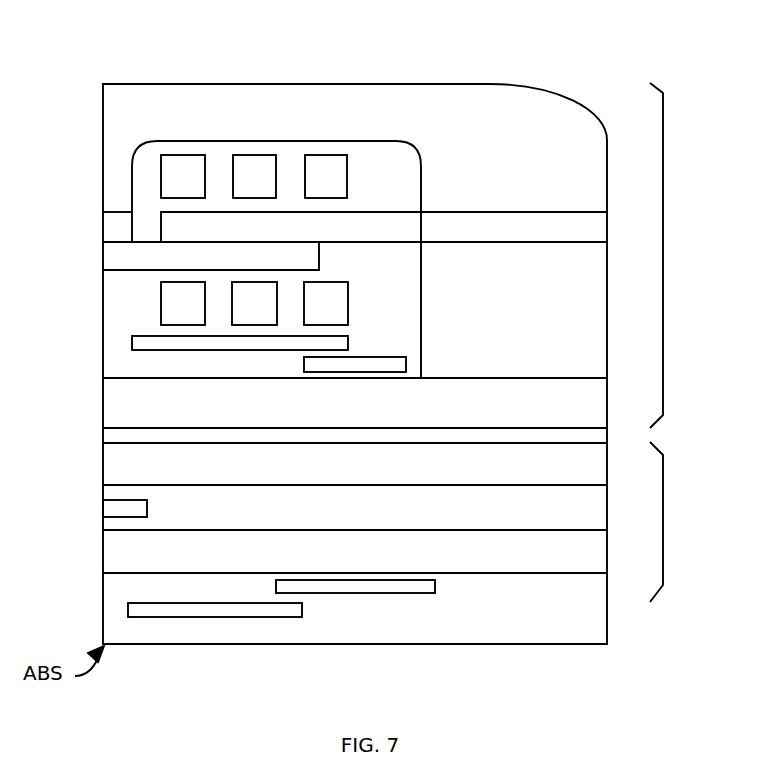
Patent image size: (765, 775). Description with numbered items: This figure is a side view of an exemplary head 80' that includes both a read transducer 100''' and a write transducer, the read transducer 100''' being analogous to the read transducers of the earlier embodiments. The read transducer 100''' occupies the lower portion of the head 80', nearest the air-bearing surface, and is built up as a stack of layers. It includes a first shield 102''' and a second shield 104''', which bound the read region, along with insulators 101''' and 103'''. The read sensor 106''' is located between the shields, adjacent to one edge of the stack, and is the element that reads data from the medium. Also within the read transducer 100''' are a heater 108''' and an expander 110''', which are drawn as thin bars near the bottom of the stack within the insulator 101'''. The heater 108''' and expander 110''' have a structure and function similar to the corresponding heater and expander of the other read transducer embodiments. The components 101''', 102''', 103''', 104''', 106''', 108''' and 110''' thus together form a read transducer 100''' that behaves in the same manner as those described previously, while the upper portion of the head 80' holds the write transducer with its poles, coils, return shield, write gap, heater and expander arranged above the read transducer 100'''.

The head 80' is at (355, 330).
The shield 104''' is at (314, 458).
The read sensor 106''' is at (95, 531).
The insulator 103''' is at (385, 491).
The shield 102''' is at (385, 538).
The read transducer 100''' is at (697, 522).
The heater 108''' is at (355, 631).
The expander 110''' is at (220, 643).
The insulator 101''' is at (381, 663).